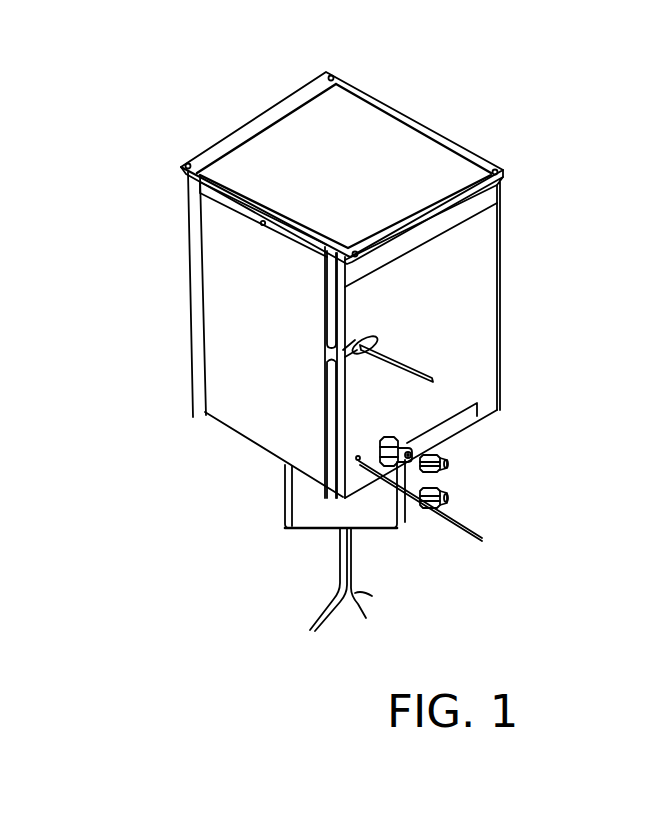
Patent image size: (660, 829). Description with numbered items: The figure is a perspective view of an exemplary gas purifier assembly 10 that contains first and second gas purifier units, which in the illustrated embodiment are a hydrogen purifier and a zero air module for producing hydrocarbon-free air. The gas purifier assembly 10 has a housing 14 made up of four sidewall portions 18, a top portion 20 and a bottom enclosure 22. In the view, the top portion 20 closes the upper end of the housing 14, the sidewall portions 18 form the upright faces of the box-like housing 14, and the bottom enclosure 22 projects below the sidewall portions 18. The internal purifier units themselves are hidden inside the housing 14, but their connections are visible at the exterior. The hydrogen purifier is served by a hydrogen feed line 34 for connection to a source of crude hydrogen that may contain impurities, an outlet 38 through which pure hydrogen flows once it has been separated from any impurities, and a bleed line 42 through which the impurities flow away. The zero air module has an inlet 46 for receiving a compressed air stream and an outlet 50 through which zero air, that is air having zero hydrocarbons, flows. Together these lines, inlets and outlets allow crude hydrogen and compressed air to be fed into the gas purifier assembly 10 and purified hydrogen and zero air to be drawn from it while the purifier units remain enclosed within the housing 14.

The gas purifier assembly 10 is at (195, 111).
The housing 14 is at (185, 288).
The sidewall portion 18 is at (255, 358).
The top portion 20 is at (345, 160).
The bottom enclosure 22 is at (307, 500).
The hydrogen feed line 34 is at (420, 363).
The outlet 38 is at (417, 443).
The bleed line 42 is at (460, 528).
The inlet 46 is at (452, 502).
The outlet 50 is at (450, 465).